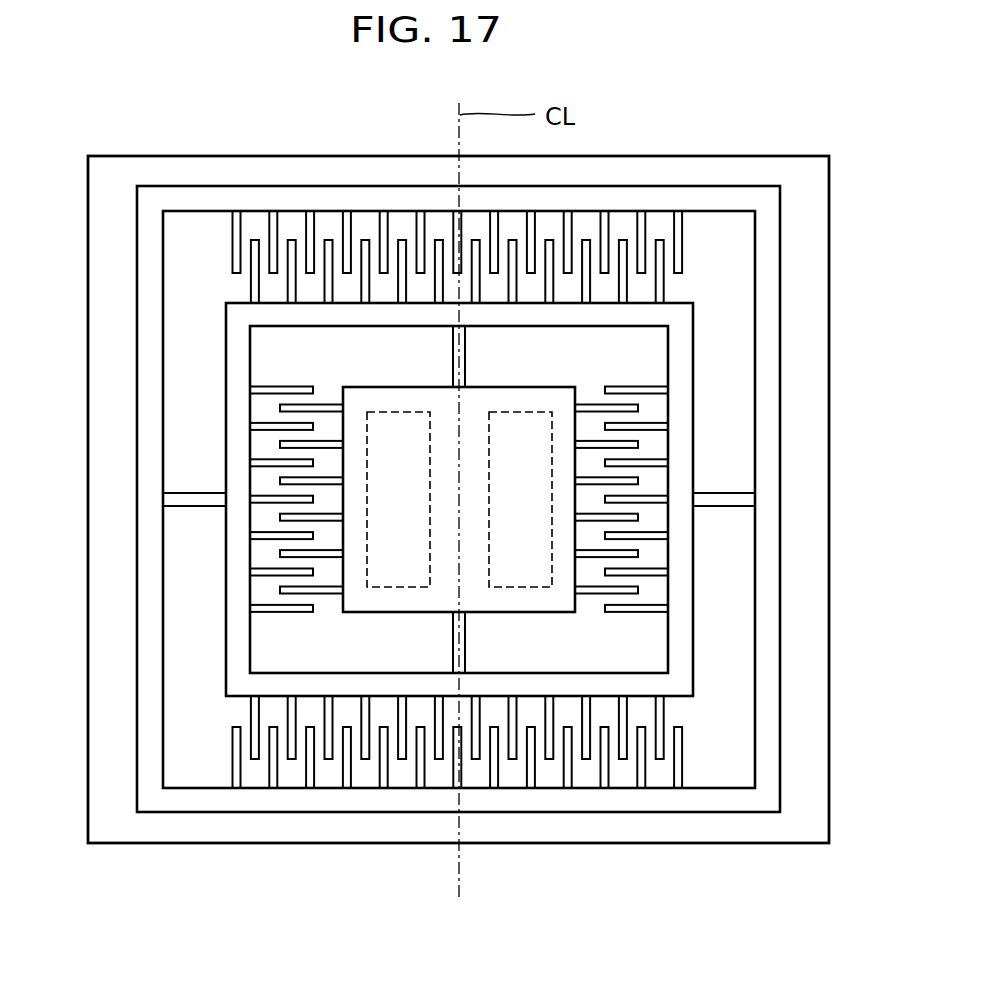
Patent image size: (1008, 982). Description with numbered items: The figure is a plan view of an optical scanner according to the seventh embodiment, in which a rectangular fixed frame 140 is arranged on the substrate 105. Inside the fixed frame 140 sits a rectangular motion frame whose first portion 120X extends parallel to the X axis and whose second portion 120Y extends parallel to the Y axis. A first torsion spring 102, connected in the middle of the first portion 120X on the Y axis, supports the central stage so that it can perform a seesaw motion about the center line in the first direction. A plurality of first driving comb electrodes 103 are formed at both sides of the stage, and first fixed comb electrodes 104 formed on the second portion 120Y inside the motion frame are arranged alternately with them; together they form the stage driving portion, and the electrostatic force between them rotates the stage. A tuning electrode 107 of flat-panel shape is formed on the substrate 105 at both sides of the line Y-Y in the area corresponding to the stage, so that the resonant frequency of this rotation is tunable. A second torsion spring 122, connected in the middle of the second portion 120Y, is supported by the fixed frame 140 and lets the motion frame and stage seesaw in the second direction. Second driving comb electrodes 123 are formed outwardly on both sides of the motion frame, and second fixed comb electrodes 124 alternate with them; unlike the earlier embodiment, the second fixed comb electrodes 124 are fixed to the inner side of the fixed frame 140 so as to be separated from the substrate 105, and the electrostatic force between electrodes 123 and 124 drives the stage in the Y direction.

The first torsion spring 102 is at (466, 357).
The first driving comb electrodes 103 is at (325, 405).
The first fixed comb electrodes 104 is at (278, 388).
The substrate 105 is at (168, 822).
The tuning electrode 107 is at (533, 412).
The first portion of the rectangular motion frame 120X is at (459, 468).
The second portion of the rectangular motion frame 120Y is at (458, 499).
The second torsion spring 122 is at (190, 495).
The second driving comb electrodes 123 is at (663, 710).
The second fixed comb electrodes 124 is at (681, 760).
The rectangular fixed frame 140 is at (752, 205).